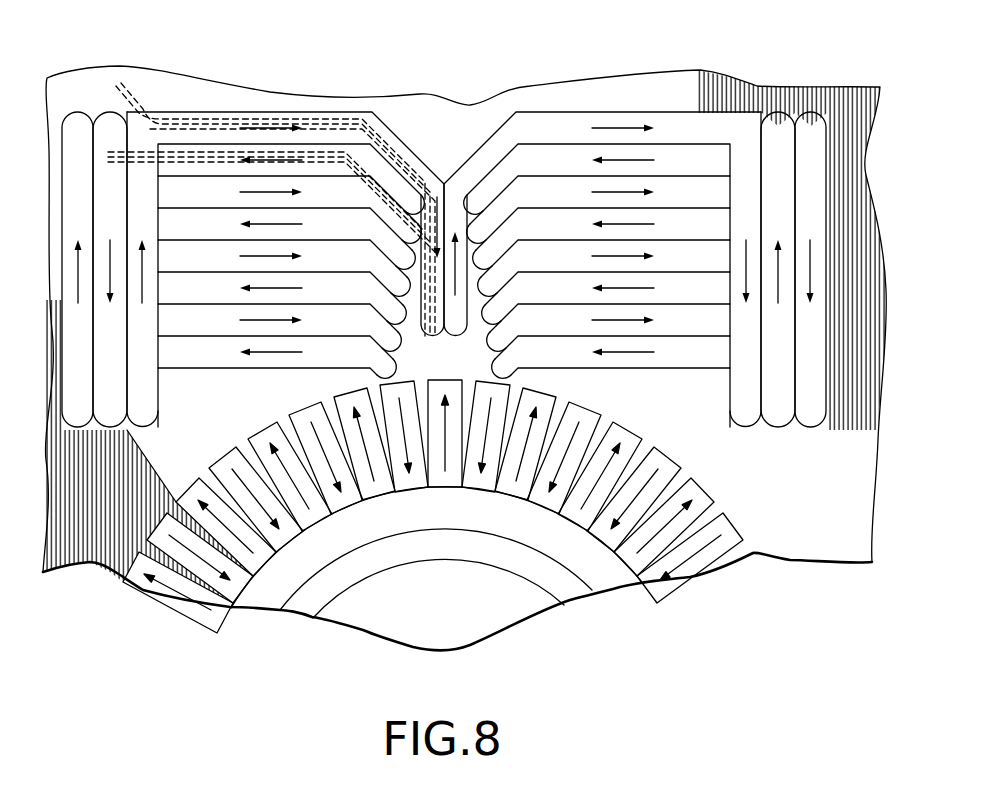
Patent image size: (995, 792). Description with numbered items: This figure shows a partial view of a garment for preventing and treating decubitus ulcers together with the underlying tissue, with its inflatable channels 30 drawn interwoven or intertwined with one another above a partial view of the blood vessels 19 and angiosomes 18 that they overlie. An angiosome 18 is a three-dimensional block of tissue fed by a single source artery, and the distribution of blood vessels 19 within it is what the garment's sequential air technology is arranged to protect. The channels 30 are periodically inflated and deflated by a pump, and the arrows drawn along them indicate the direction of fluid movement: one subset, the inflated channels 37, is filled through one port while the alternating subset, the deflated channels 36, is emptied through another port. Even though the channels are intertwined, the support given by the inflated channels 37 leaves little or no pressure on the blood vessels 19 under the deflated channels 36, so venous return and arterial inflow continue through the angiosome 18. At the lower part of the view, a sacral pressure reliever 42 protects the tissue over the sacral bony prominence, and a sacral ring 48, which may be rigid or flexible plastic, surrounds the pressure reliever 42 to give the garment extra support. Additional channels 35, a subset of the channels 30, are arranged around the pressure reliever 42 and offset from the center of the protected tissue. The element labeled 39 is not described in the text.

The angiosome 18 is at (370, 112).
The blood vessels 19 is at (347, 153).
The channels 30 is at (177, 199).
The channels configured around the pressure relievers 35 is at (657, 452).
The deflated channels 36 is at (252, 152).
The inflated channels 37 is at (193, 183).
The right winding coil 39 is at (680, 128).
The pressure reliever 42 is at (458, 624).
The sacral ring 48 is at (562, 588).